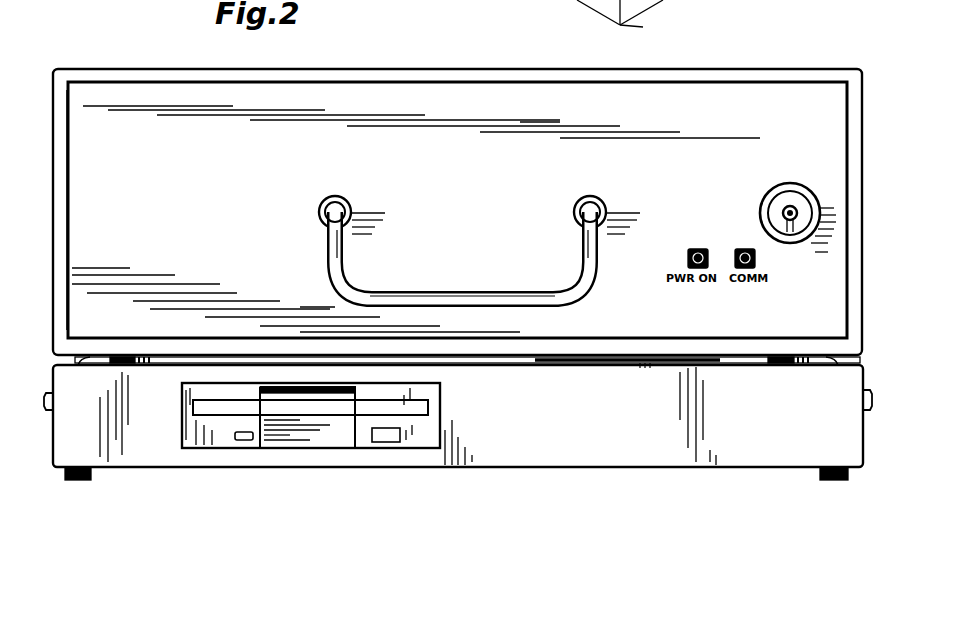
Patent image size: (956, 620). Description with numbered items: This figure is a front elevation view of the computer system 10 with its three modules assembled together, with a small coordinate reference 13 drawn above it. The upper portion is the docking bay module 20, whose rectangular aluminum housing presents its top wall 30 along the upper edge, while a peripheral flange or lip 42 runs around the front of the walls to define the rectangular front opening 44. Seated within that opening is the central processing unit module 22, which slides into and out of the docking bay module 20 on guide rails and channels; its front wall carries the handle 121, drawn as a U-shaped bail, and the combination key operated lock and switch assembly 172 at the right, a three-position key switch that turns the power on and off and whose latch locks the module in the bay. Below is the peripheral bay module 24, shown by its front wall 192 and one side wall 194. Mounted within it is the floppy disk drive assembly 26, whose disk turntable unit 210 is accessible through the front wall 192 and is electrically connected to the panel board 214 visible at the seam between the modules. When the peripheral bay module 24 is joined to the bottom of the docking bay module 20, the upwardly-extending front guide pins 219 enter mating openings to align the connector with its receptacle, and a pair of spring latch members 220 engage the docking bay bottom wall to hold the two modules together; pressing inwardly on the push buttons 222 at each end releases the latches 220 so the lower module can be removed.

The portable computer system 10 is at (731, 3).
The coordinate axis 13 is at (608, 30).
The docking bay module 20 is at (716, 62).
The central processing unit (CPU) module 22 is at (394, 98).
The peripheral bay module 24 is at (645, 455).
The floppy disk drive assembly 26 is at (450, 420).
The top wall 30 is at (183, 68).
The peripheral flange or lip 42 is at (66, 298).
The rectangular front opening 44 is at (72, 250).
The handle 121 is at (450, 291).
The key operated lock and switch assembly 172 is at (788, 183).
The front wall 192 is at (745, 431).
The side wall 194 is at (679, 13).
The disk turntable unit 210 is at (182, 433).
The panel board 214 is at (604, 365).
The front guide pins 219 is at (154, 366).
The spring latch members 220 is at (78, 365).
The push buttons 222 is at (52, 408).